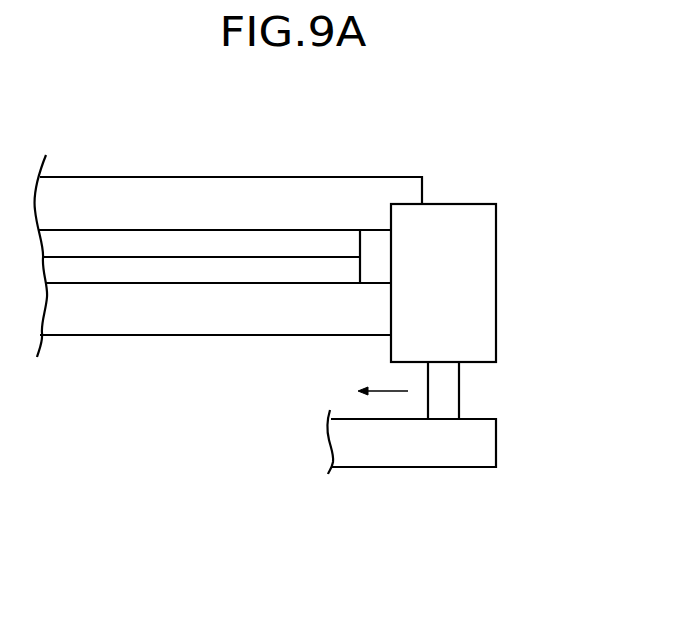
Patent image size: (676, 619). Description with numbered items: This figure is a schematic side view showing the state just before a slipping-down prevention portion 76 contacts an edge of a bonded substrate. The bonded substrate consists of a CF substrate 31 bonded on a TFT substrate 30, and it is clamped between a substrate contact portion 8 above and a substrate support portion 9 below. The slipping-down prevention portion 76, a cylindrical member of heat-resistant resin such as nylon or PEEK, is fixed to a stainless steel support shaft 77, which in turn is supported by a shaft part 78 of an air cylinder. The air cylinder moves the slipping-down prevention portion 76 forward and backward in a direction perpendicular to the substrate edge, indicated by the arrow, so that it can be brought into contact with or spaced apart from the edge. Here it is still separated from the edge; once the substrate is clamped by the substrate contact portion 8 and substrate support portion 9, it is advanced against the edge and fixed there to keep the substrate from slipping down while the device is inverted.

The substrate contact portion 8 is at (273, 190).
The substrate support portion 9 is at (232, 322).
The TFT substrate 30 is at (100, 272).
The CF substrate 31 is at (142, 238).
The slipping-down prevention portion 76 is at (485, 271).
The support shaft 77 is at (455, 392).
The shaft part 78 is at (492, 439).